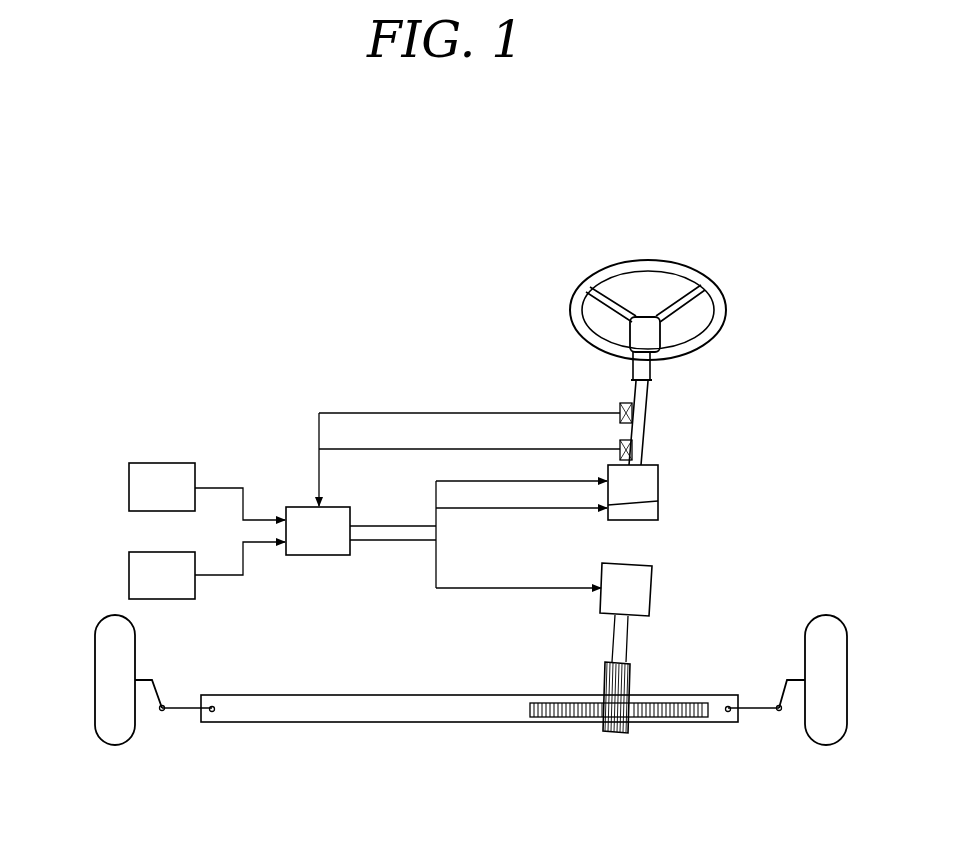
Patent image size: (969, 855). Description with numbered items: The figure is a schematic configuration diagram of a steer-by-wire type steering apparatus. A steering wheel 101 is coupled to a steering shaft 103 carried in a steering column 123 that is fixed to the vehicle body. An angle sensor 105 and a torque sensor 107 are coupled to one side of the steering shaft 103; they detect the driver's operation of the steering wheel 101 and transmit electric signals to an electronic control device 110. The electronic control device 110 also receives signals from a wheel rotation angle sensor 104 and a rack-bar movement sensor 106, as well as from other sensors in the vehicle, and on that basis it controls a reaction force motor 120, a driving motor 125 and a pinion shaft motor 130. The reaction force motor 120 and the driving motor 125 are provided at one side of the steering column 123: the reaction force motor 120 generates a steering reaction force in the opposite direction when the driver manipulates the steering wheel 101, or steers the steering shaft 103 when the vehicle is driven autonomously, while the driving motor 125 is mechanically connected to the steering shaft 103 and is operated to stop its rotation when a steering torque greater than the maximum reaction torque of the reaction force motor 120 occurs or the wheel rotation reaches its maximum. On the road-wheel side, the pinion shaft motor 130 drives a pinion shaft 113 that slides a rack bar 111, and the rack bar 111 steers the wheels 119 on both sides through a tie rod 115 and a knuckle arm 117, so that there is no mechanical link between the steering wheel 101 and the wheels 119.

The steering wheel 101 is at (718, 315).
The steering shaft 103 is at (650, 393).
The wheel rotation angle sensor 104 is at (128, 488).
The angle sensor 105 is at (619, 404).
The rack-bar movement sensor 106 is at (128, 573).
The torque sensor 107 is at (619, 441).
The electronic control device 110 is at (317, 558).
The rack bar 111 is at (392, 713).
The pinion shaft 113 is at (628, 675).
The tie rod 115 is at (177, 712).
The knuckle arm 117 is at (158, 692).
The wheel 119 is at (132, 640).
The reaction force motor 120 is at (655, 487).
The steering column 123 is at (675, 428).
The driving motor 125 is at (658, 515).
The pinion shaft motor 130 is at (648, 580).